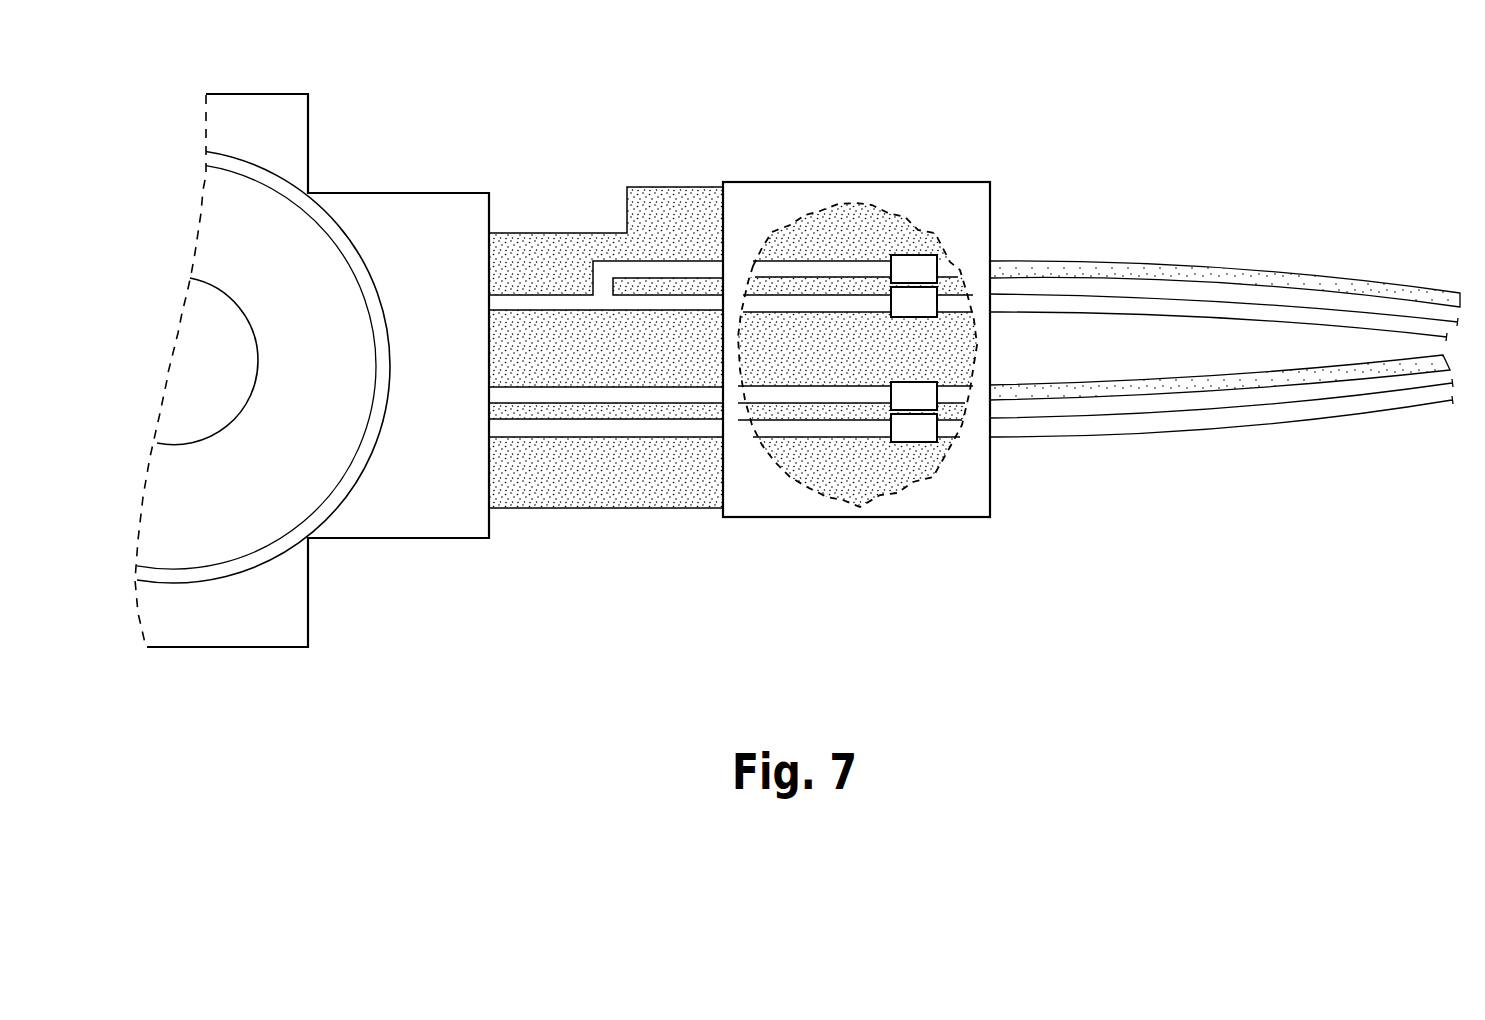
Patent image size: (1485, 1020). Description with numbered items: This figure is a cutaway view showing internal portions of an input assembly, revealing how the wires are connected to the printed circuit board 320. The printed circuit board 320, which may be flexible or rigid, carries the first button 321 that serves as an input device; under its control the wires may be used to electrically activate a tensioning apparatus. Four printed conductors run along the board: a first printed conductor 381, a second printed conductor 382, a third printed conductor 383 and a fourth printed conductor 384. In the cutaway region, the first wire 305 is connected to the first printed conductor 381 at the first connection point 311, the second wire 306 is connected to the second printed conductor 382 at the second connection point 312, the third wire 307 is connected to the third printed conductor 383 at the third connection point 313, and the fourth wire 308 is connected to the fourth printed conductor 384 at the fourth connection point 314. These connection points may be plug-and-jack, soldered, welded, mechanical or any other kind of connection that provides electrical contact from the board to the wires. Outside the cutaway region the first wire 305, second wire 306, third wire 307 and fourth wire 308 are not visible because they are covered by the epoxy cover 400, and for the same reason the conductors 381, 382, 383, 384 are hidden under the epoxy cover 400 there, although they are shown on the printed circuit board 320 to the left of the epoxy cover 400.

The first wire 305 is at (1372, 278).
The second wire 306 is at (1290, 310).
The third wire 307 is at (1300, 382).
The fourth wire 308 is at (1372, 403).
The first connection point 311 is at (898, 262).
The second connection point 312 is at (937, 291).
The third connection point 313 is at (893, 443).
The fourth connection point 314 is at (922, 415).
The printed circuit board 320 is at (860, 228).
The first button 321 is at (200, 292).
The first printed conductor 381 is at (778, 252).
The second printed conductor 382 is at (808, 303).
The third printed conductor 383 is at (760, 405).
The fourth printed conductor 384 is at (798, 433).
The epoxy cover 400 is at (981, 503).